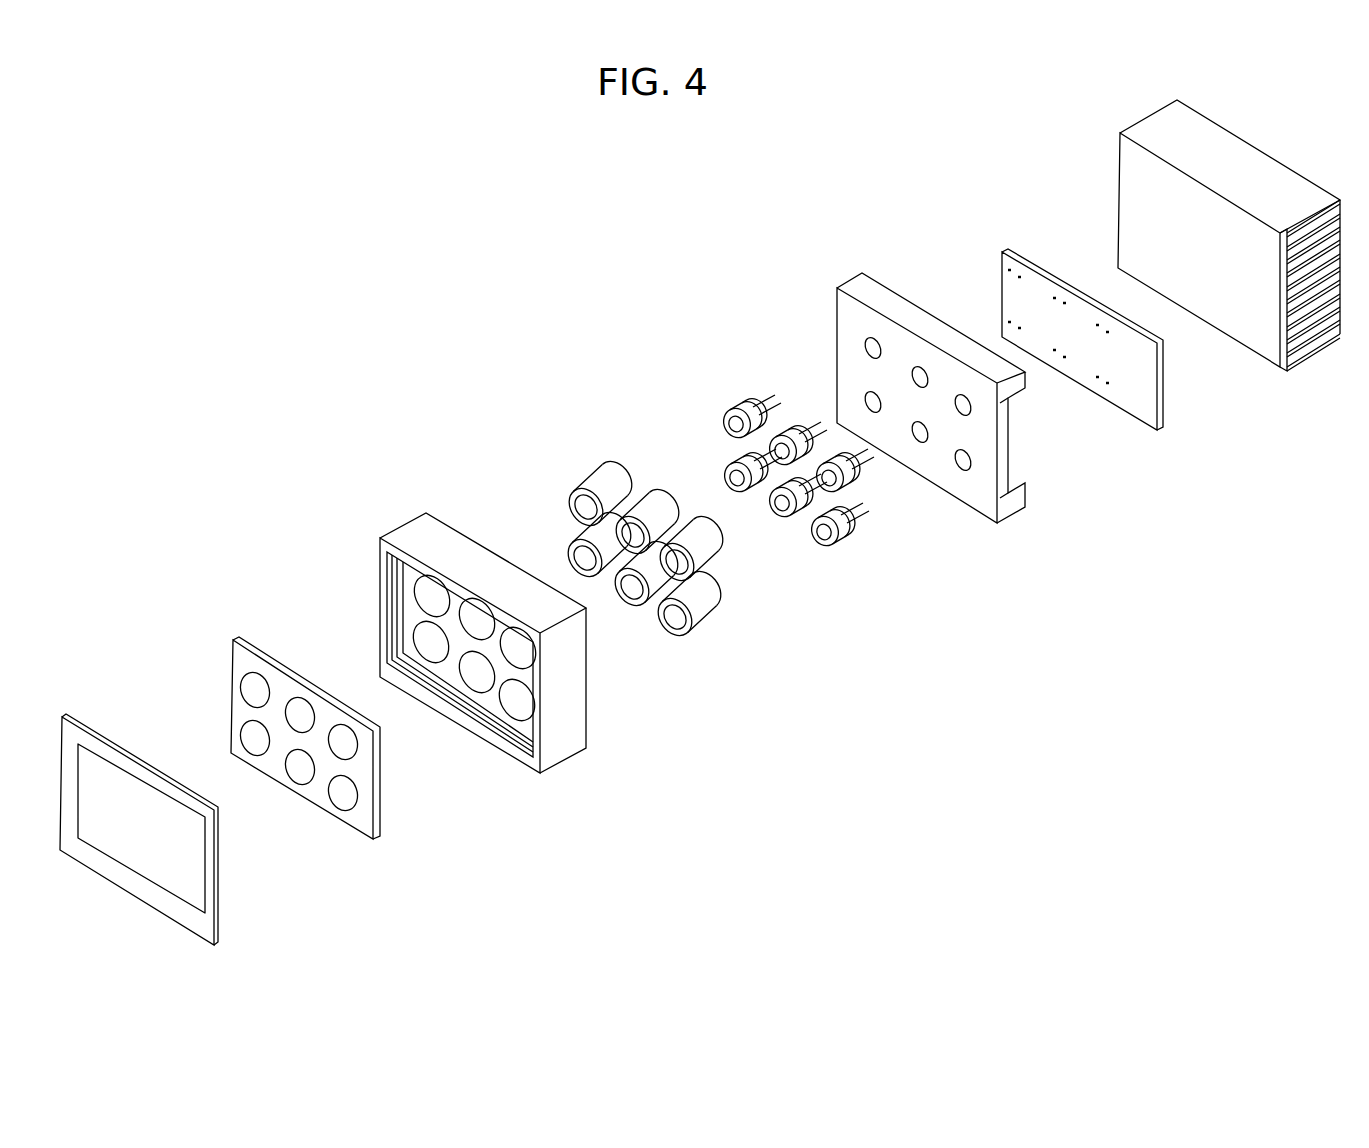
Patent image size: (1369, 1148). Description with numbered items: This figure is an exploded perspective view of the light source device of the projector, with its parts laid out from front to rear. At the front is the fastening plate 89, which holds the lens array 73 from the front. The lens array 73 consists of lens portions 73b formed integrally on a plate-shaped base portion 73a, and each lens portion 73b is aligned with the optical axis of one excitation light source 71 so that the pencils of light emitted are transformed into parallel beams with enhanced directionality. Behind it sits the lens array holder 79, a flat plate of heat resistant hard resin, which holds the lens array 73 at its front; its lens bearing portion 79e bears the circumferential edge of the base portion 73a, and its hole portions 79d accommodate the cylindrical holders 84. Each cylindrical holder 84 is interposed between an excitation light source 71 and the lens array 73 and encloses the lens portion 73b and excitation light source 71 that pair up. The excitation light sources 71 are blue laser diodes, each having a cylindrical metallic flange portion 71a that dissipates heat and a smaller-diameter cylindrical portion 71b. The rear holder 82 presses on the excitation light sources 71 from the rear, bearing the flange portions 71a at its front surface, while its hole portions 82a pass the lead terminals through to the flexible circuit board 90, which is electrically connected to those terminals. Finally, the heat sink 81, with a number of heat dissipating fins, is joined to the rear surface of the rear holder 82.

The excitation light source 71 is at (787, 501).
The flange portion 71a is at (856, 609).
The cylindrical portion 71b is at (838, 543).
The lens array 73 is at (346, 786).
The base portion 73a is at (349, 782).
The lens portion 73b is at (342, 797).
The lens array holder 79 is at (443, 687).
The hole portion 79d is at (477, 677).
The lens bearing portion 79e is at (385, 605).
The heat sink 81 is at (1285, 367).
The rear holder 82 is at (945, 443).
The hole portion 82a is at (958, 467).
The cylindrical holder 84 is at (585, 475).
The fastening plate 89 is at (87, 730).
The flexible circuit board 90 is at (1140, 425).